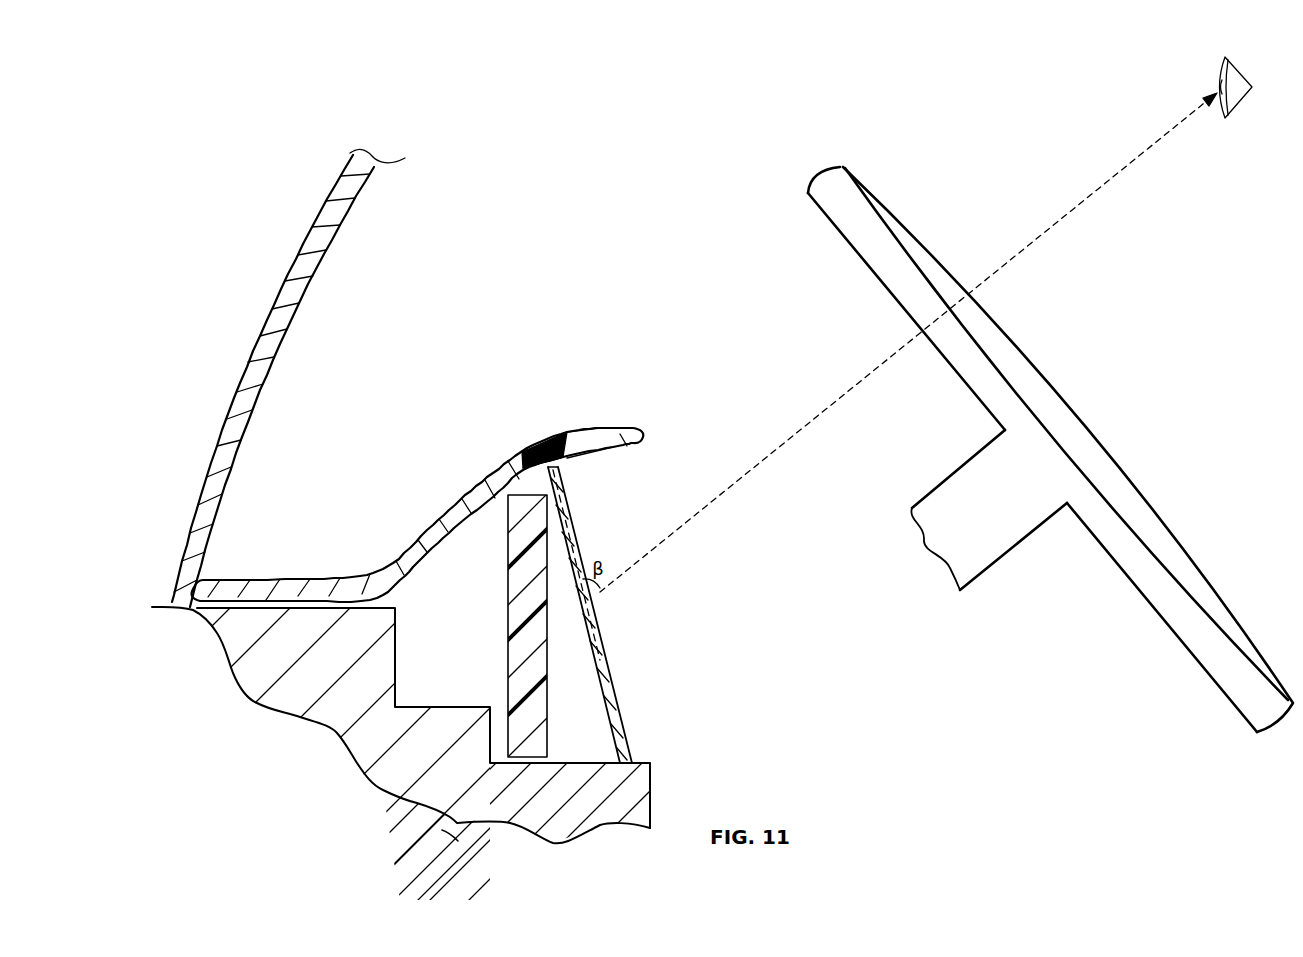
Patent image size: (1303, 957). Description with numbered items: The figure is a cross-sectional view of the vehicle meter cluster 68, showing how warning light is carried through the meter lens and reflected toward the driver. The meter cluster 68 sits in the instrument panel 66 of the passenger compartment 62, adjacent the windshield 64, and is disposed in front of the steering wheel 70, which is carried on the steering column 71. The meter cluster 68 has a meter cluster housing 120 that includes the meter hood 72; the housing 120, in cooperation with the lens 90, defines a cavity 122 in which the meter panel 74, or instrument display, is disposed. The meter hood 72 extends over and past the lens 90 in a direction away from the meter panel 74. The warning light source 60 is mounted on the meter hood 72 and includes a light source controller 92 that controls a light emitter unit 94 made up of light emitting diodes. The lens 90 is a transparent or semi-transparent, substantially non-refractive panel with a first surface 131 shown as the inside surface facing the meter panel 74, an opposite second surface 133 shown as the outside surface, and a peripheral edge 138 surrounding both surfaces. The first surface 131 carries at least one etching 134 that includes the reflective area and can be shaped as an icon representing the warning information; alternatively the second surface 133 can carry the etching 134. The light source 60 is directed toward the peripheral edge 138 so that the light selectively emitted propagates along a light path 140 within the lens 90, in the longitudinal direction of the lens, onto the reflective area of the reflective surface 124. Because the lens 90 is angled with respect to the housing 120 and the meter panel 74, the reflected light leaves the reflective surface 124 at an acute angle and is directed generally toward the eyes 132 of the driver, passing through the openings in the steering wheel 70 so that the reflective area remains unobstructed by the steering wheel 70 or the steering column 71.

The warning light source 60 is at (578, 437).
The passenger compartment 62 is at (395, 210).
The windshield 64 is at (284, 330).
The instrument panel 66 is at (274, 587).
The meter cluster 68 is at (667, 598).
The steering wheel 70 is at (833, 168).
The steering column 71 is at (940, 480).
The meter hood 72 is at (620, 432).
The meter panel 74 is at (525, 740).
The lens 90 is at (625, 737).
The light source controller 92 is at (533, 442).
The light emitter unit 94 is at (560, 458).
The meter cluster housing 120 is at (433, 706).
The cavity 122 is at (458, 573).
The reflective surface 124 is at (623, 615).
The first surface 131 is at (600, 678).
The eyes 132 is at (1240, 92).
The second surface 133 is at (617, 697).
The etching 134 is at (583, 596).
The peripheral edge 138 is at (563, 467).
The light path 140 is at (567, 513).